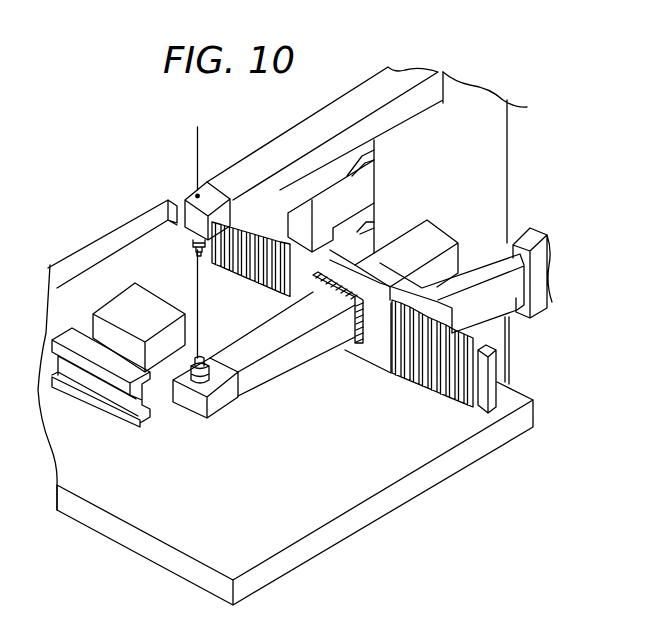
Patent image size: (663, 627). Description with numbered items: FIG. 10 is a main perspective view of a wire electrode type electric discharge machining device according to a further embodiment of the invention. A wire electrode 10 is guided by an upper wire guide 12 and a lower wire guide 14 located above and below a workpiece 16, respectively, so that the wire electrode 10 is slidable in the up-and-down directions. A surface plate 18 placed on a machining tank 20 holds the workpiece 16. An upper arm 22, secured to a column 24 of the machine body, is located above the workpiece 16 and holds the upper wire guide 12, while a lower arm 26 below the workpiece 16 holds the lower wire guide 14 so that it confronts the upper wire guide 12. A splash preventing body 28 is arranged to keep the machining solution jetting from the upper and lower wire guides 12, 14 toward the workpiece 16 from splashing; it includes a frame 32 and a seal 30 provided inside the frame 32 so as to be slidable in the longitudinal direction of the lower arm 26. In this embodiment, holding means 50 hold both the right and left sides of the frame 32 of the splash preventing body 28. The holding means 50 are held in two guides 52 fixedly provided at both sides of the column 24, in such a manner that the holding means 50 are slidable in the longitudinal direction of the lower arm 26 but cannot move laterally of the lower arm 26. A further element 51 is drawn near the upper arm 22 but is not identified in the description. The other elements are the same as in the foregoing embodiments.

The wire electrode 10 is at (196, 150).
The upper wire guide 12 is at (185, 200).
The lower wire guide 14 is at (202, 410).
The workpiece 16 is at (108, 300).
The surface plate 18 is at (110, 415).
The machining tank 20 is at (158, 557).
The upper arm 22 is at (275, 141).
The column 24 is at (509, 150).
The lower arm 26 is at (270, 377).
The splash preventing body 28 is at (478, 413).
The seal 30 is at (358, 343).
The frame 32 is at (372, 357).
The holding means 50 is at (357, 200).
The slider 51 is at (374, 156).
The guides 52 is at (527, 233).